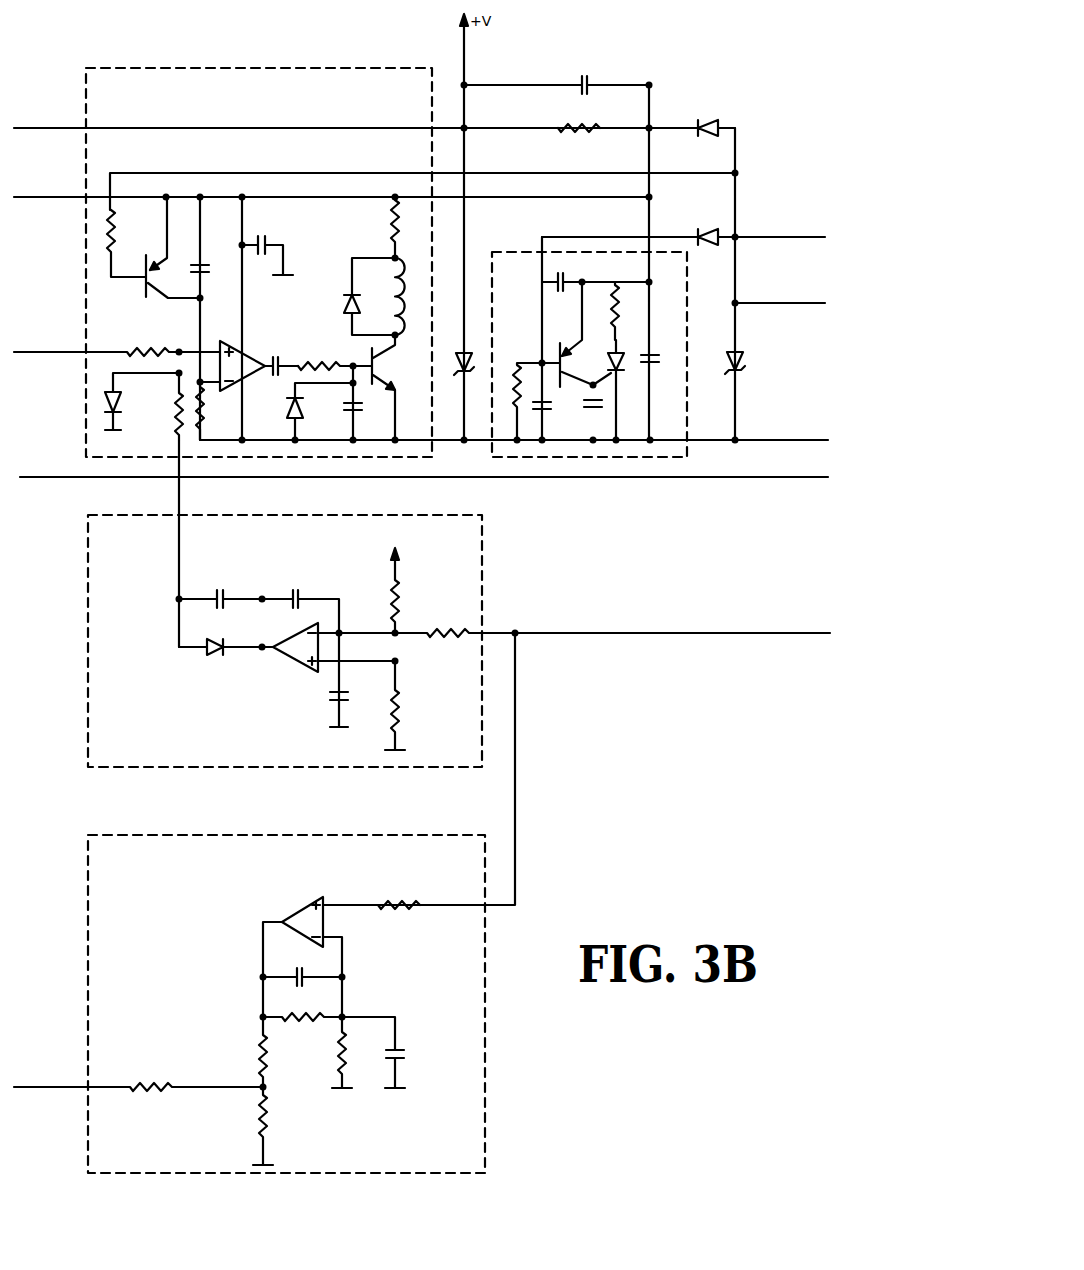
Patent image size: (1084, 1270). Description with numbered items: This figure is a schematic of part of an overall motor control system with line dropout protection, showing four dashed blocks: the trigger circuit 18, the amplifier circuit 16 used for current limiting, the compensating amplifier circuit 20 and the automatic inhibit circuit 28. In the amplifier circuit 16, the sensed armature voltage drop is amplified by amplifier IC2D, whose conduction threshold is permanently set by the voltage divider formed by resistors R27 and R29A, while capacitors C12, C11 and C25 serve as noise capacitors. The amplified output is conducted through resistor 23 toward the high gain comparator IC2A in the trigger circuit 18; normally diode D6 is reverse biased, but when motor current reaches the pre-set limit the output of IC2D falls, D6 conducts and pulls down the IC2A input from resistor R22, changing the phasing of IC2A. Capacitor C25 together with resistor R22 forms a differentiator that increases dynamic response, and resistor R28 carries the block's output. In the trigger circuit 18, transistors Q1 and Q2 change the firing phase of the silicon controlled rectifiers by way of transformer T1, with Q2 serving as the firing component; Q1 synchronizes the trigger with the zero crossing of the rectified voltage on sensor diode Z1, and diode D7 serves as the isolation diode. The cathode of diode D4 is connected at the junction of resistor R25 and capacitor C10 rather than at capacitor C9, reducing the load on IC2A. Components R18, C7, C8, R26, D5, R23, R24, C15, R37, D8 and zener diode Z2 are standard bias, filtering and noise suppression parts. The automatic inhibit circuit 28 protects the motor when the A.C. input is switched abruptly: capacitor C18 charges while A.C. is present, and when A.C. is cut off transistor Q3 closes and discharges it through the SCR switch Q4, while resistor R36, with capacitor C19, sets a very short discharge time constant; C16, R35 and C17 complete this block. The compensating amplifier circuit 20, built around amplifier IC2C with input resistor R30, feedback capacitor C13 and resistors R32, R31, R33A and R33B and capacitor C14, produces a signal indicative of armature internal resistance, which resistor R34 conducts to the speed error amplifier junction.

The trigger circuit 18 is at (156, 68).
The amplifier circuit 16 is at (482, 560).
The compensating amplifier circuit 20 is at (485, 1112).
The automatic inhibit circuit 28 is at (687, 452).
The resistor 23 is at (116, 401).
The resistor R18 is at (128, 243).
The transistor Q1 is at (161, 254).
The capacitor C7 is at (211, 270).
The capacitor C8 is at (267, 247).
The resistor R26 is at (376, 227).
The transformer T1 is at (406, 293).
The diode D5 is at (358, 296).
The transistor Q2 is at (388, 387).
The resistor R25 is at (335, 357).
The capacitor C9 is at (277, 378).
The high gain comparator IC2A is at (250, 358).
The resistor R22 is at (117, 344).
The resistor R23 is at (160, 406).
The resistor R24 is at (216, 411).
The diode D4 is at (308, 411).
The capacitor C10 is at (341, 404).
The capacitor C15 is at (556, 75).
The resistor R37 is at (579, 142).
The isolation diode D7 is at (716, 115).
The diode D8 is at (638, 225).
The sensor diode Z1 is at (457, 351).
The zener diode Z2 is at (726, 373).
The capacitor C16 is at (596, 274).
The resistor R36 is at (616, 298).
The transistor Q3 is at (567, 334).
The resistor R35 is at (513, 396).
The capacitor C17 is at (554, 418).
The capacitor C18 is at (615, 414).
The SCR switch Q4 is at (618, 390).
The capacitor C19 is at (661, 348).
The capacitor C25 is at (220, 590).
The capacitor C11 is at (300, 603).
The amplifier IC2D is at (291, 656).
The diode D6 is at (226, 664).
The resistor R27 is at (394, 590).
The resistor R29A is at (413, 705).
The capacitor C12 is at (355, 680).
The resistor R28 is at (455, 621).
The resistor R30 is at (371, 919).
The amplifier IC2C is at (292, 913).
The capacitor C13 is at (302, 968).
The resistor R32 is at (302, 1032).
The resistor R31 is at (356, 1052).
The capacitor C14 is at (390, 1052).
The resistor R33A is at (239, 1052).
The resistor R33B is at (242, 1126).
The resistor R34 is at (138, 1075).